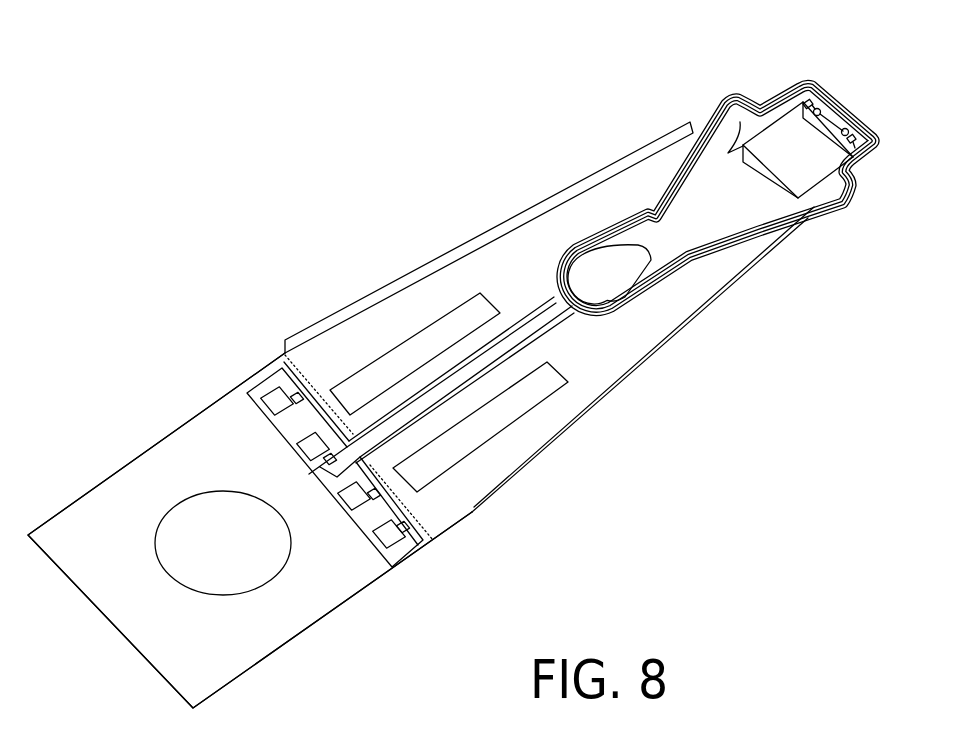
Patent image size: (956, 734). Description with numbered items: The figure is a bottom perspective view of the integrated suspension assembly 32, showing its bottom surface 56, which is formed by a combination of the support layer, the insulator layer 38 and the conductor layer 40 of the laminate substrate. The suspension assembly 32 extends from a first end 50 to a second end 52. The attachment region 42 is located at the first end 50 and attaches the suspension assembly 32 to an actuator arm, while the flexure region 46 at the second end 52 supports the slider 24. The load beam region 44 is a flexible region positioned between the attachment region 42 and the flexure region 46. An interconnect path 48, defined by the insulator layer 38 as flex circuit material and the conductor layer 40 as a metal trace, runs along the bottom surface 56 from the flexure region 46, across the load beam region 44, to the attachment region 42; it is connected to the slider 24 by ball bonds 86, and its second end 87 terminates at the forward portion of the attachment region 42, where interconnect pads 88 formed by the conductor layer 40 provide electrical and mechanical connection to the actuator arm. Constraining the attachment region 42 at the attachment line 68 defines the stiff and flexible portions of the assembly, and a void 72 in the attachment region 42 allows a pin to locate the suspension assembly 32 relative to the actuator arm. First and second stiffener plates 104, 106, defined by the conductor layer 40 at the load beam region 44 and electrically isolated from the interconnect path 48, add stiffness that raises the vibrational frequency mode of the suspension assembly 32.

The slider 24 is at (792, 175).
The suspension assembly 32 is at (203, 261).
The insulator layer 38 is at (552, 318).
The conductor layer 40 is at (540, 340).
The attachment region 42 is at (225, 630).
The load beam region 44 is at (522, 250).
The flexure region 46 is at (856, 106).
The interconnect path 48 is at (692, 268).
The first end 50 is at (135, 652).
The second end 52 is at (858, 104).
The bottom surface 56 is at (431, 289).
The attachment line 68 is at (423, 518).
The void 72 is at (172, 528).
The ball bonds 86 is at (803, 118).
The second end 87 is at (327, 480).
The interconnect pads 88 is at (308, 447).
The first stiffener plate 104 is at (485, 433).
The second stiffener plate 106 is at (390, 370).